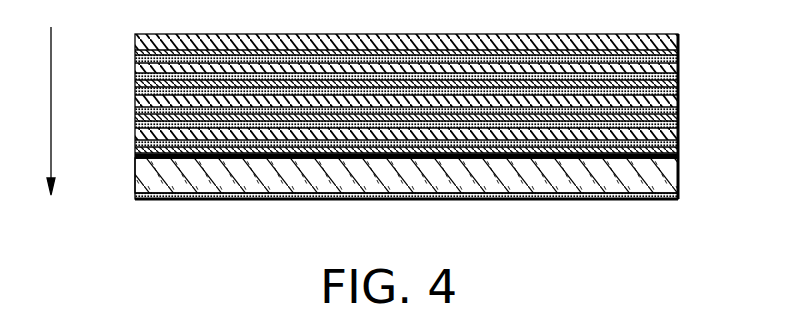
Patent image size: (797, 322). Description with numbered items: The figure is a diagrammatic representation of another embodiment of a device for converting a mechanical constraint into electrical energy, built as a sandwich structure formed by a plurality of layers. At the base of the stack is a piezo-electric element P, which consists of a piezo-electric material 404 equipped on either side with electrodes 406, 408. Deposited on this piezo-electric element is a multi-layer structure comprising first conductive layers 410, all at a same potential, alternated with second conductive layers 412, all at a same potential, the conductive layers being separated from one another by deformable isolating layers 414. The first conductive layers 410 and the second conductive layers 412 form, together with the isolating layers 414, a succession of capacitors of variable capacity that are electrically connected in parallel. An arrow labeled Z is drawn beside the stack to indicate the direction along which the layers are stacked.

The piezo-electric material 404 is at (406, 208).
The electrode 406 is at (142, 163).
The electrode 408 is at (625, 195).
The first conductive layer 410 is at (679, 52).
The second conductive layer 412 is at (679, 100).
The deformable isolating layer 414 is at (679, 93).
The piezo-electric element P is at (218, 177).
The Z direction Z is at (42, 111).